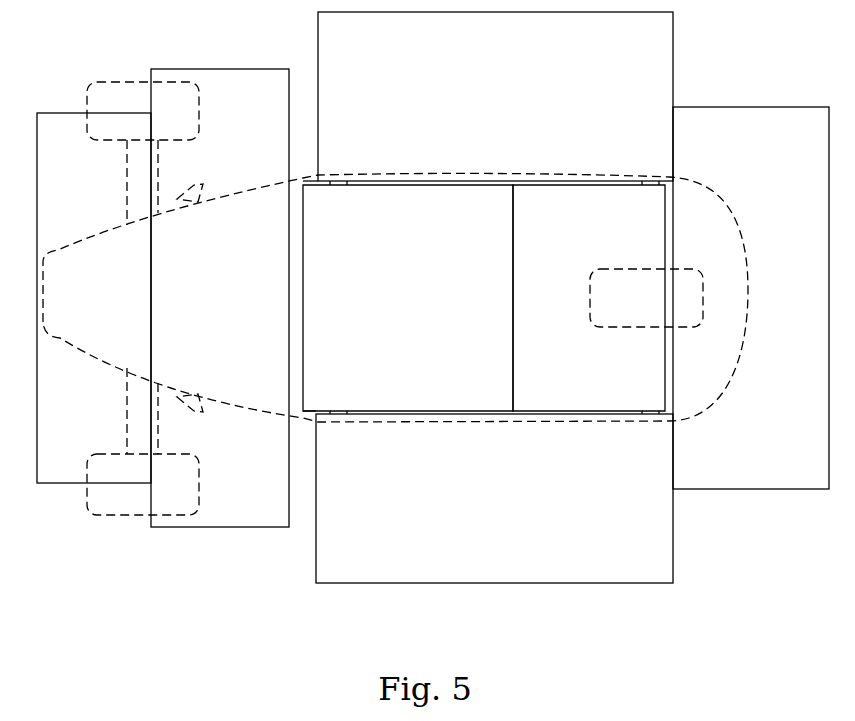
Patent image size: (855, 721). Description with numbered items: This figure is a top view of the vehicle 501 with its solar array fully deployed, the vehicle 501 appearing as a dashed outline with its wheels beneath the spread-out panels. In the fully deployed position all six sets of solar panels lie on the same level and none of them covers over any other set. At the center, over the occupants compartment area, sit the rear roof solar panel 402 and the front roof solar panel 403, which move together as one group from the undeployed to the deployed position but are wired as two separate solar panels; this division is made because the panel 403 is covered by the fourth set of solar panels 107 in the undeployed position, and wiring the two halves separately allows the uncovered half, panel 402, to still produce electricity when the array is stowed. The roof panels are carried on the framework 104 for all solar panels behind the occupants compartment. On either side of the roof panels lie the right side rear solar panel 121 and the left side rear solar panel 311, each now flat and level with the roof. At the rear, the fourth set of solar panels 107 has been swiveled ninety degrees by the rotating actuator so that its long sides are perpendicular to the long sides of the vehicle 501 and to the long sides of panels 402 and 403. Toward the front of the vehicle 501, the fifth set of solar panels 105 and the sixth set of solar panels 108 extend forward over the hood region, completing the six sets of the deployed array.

The sixth set of solar panels 108 is at (72, 297).
The fifth set of solar panels 105 is at (206, 297).
The right side rear solar panel 121 is at (491, 102).
The left side rear solar panel 311 is at (491, 509).
The fourth set of solar panels 107 is at (769, 311).
The framework for all solar panels behind the occupants compartment 104 is at (347, 412).
The rear roof solar panel 402 is at (384, 312).
The front roof solar panel 403 is at (535, 312).
The vehicle 501 is at (302, 428).